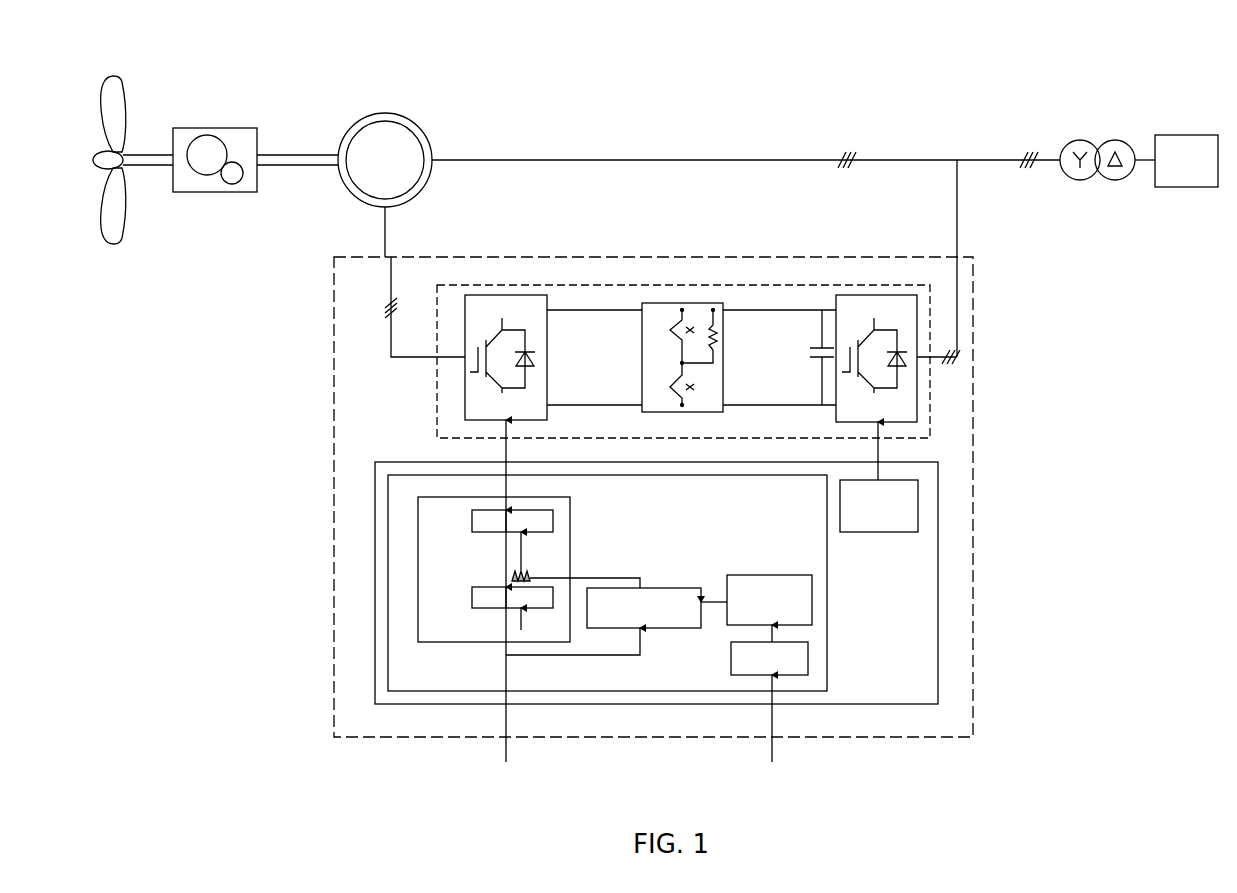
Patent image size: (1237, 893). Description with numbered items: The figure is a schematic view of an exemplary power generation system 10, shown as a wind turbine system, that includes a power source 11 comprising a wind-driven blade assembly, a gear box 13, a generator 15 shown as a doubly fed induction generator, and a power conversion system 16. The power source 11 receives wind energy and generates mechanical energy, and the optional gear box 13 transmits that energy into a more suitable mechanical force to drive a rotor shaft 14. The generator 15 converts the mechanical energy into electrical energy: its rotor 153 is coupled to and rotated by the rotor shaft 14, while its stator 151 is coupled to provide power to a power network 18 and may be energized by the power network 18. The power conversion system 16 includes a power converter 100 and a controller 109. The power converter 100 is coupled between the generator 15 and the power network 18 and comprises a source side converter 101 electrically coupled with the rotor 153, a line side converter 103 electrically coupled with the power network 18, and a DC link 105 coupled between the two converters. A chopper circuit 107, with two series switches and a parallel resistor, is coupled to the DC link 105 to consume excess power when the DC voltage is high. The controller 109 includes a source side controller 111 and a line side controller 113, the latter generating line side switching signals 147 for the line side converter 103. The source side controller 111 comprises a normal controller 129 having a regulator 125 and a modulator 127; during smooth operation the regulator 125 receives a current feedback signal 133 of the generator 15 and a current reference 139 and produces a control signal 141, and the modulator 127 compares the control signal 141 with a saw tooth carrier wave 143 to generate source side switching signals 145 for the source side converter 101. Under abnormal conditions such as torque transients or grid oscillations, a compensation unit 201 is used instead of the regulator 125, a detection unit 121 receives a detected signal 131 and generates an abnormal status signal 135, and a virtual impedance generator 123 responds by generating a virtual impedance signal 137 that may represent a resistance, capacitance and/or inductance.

The power generation system 10 is at (284, 70).
The power source 11 is at (130, 225).
The gear box 13 is at (217, 128).
The rotor shaft 14 is at (322, 155).
The generator 15 is at (392, 144).
The power conversion system 16 is at (724, 257).
The power network 18 is at (1193, 187).
The power converter 100 is at (775, 285).
The source side converter 101 is at (516, 295).
The line side converter 103 is at (877, 295).
The DC link 105 is at (776, 310).
The chopper circuit 107 is at (683, 303).
The controller 109 is at (375, 555).
The source side controller 111 is at (828, 578).
The line side controller 113 is at (880, 532).
The detection unit 121 is at (808, 658).
The virtual impedance generator 123 is at (812, 600).
The regulator 125 is at (472, 599).
The modulator 127 is at (472, 520).
The normal controller 129 is at (572, 520).
The detected signal 131 is at (775, 745).
The current feedback signal 133 is at (507, 748).
The abnormal status signal 135 is at (775, 636).
The virtual impedance signal 137 is at (717, 606).
The current reference 139 is at (523, 622).
The control signal 141 is at (512, 577).
The carrier wave 143 is at (524, 552).
The source side switching signals 145 is at (508, 449).
The line side switching signals 147 is at (881, 450).
The stator 151 is at (395, 113).
The rotor 153 is at (365, 132).
The compensation unit 201 is at (682, 587).